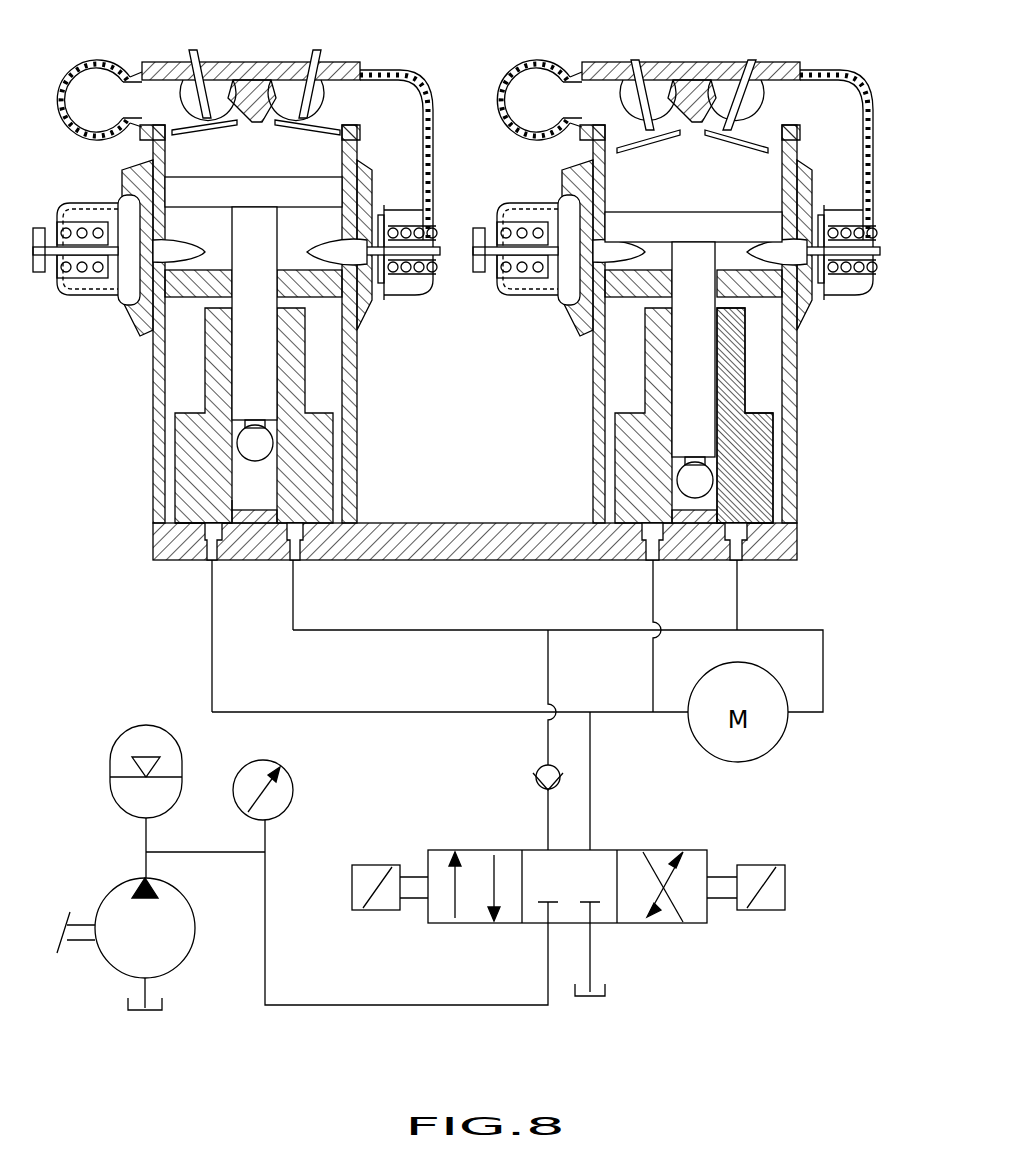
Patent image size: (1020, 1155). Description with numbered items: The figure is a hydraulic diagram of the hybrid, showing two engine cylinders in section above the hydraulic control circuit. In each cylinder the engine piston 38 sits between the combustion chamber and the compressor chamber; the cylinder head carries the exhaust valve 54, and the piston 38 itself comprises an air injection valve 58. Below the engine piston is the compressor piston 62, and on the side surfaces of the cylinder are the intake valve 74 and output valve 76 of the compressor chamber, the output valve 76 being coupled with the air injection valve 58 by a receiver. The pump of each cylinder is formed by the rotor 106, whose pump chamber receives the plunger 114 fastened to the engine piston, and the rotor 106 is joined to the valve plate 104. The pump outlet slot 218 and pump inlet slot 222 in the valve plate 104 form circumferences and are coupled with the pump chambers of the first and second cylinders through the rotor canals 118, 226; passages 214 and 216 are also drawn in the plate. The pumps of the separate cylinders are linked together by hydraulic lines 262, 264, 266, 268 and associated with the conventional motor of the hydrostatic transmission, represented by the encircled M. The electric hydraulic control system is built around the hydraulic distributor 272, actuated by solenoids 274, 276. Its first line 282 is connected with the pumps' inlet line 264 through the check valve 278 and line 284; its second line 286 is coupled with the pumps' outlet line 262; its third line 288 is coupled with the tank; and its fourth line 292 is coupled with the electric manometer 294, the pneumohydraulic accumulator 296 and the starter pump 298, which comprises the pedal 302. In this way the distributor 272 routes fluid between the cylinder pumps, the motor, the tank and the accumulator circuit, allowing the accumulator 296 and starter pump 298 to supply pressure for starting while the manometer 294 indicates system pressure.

The piston 38 is at (233, 185).
The exhaust valve 54 is at (191, 48).
The air injection valve 58 is at (319, 48).
The compressor piston 62 is at (213, 262).
The intake valve 74 is at (105, 296).
The output valve 76 is at (393, 290).
The valve plate 104 is at (508, 528).
The rotor 106 is at (190, 432).
The plunger 114 is at (265, 402).
The canal 118 is at (200, 513).
The port 214 is at (302, 518).
The hydraulic line 216 is at (215, 545).
The pump outlet slot 218 is at (642, 545).
The pump inlet slot 222 is at (748, 538).
The canal 226 is at (732, 516).
The pumps' outlet line 262 is at (350, 712).
The pumps' inlet line 264 is at (452, 631).
The hydraulic line 266 is at (656, 575).
The hydraulic line 268 is at (740, 575).
The hydraulic distributor 272 is at (707, 918).
The solenoid 274 is at (370, 865).
The solenoid 276 is at (760, 865).
The check valve 278 is at (536, 772).
The first line 282 is at (548, 835).
The line 284 is at (548, 658).
The second line 286 is at (592, 835).
The third line 288 is at (595, 945).
The fourth line 292 is at (330, 1005).
The electric manometer 294 is at (290, 776).
The pneumohydraulic accumulator 296 is at (110, 737).
The starter pump 298 is at (110, 968).
The pedal 302 is at (64, 916).